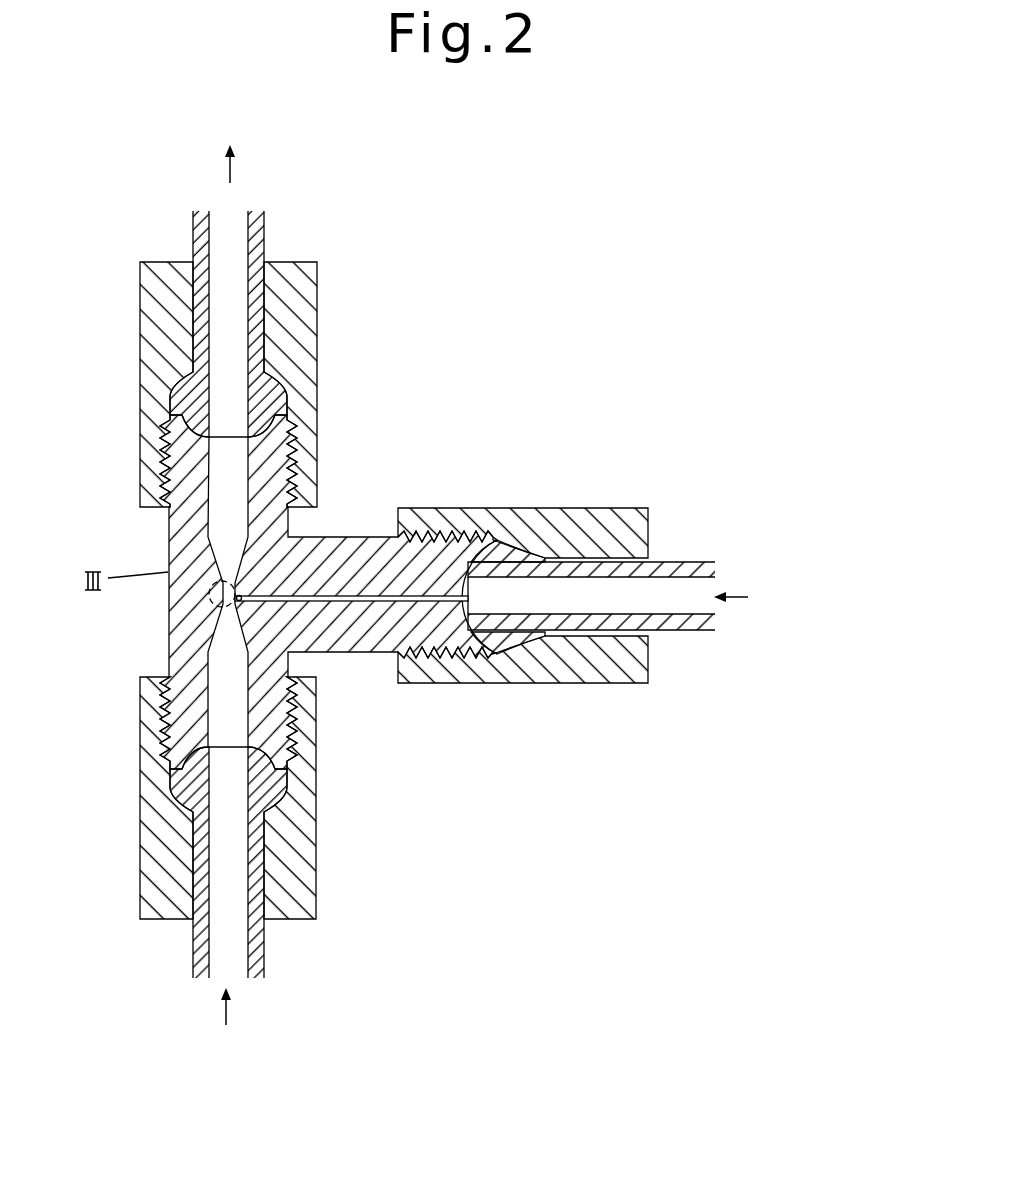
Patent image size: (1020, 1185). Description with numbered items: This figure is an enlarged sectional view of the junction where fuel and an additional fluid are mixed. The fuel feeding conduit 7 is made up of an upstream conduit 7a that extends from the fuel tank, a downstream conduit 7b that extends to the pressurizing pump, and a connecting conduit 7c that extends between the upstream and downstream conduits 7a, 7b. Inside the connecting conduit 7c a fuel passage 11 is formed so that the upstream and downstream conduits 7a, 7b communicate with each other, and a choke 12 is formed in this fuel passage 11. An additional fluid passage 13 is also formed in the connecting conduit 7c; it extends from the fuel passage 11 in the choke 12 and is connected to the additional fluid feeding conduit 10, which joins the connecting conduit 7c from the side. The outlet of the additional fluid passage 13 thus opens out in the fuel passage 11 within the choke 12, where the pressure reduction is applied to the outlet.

The fuel feeding conduit 7 is at (92, 848).
The upstream conduit 7a is at (192, 957).
The downstream conduit 7b is at (192, 222).
The connecting conduit 7c is at (168, 641).
The additional fluid feeding conduit 10 is at (690, 561).
The fuel passage 11 is at (206, 699).
The choke 12 is at (203, 606).
The additional fluid passage 13 is at (366, 603).